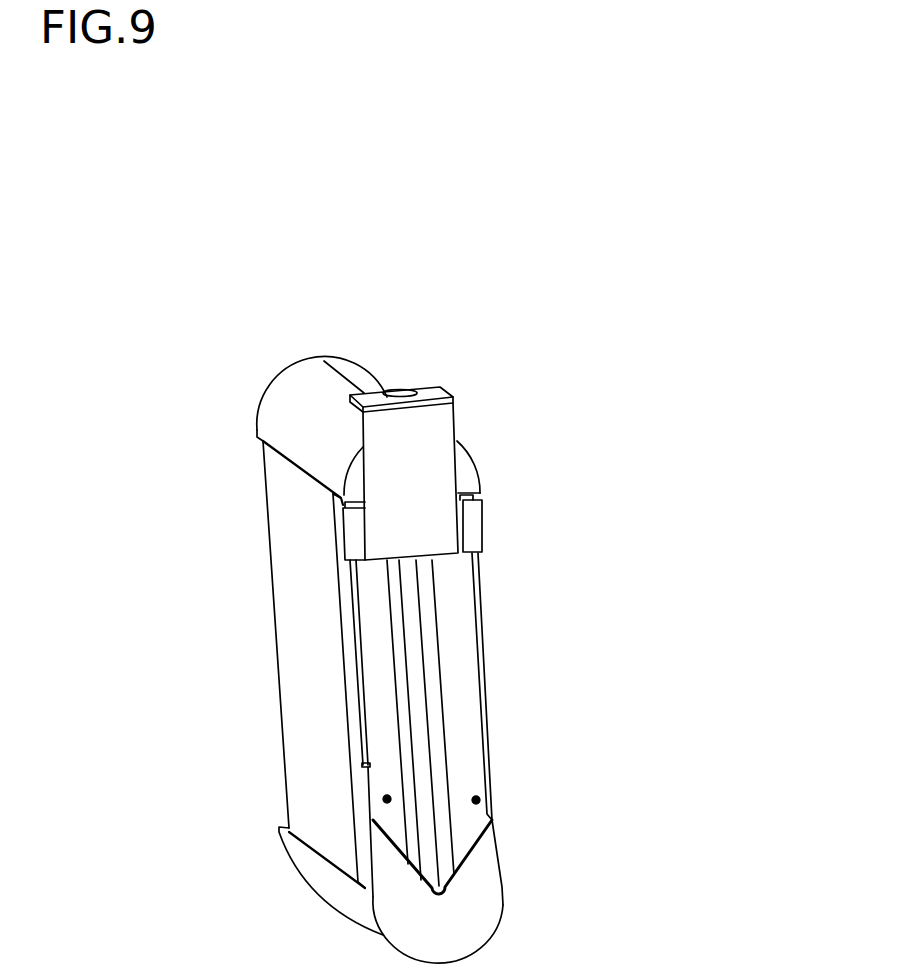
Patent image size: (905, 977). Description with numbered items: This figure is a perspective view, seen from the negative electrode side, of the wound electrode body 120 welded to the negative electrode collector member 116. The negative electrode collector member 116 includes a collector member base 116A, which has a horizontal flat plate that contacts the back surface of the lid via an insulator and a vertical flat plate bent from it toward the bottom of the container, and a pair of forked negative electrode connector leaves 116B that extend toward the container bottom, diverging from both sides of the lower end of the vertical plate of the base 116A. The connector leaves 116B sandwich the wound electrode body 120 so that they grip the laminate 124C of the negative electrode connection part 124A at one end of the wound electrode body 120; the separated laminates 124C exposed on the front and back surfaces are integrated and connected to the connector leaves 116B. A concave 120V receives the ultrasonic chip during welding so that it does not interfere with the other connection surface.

The wound electrode body 120 is at (345, 365).
The negative electrode collector member 116 is at (524, 472).
The collector member base 116A is at (445, 422).
The negative electrode collector connection leaves 116B is at (478, 535).
The concave 120V is at (456, 751).
The negative electrode connection part 124A is at (456, 751).
The laminate 124C is at (476, 800).